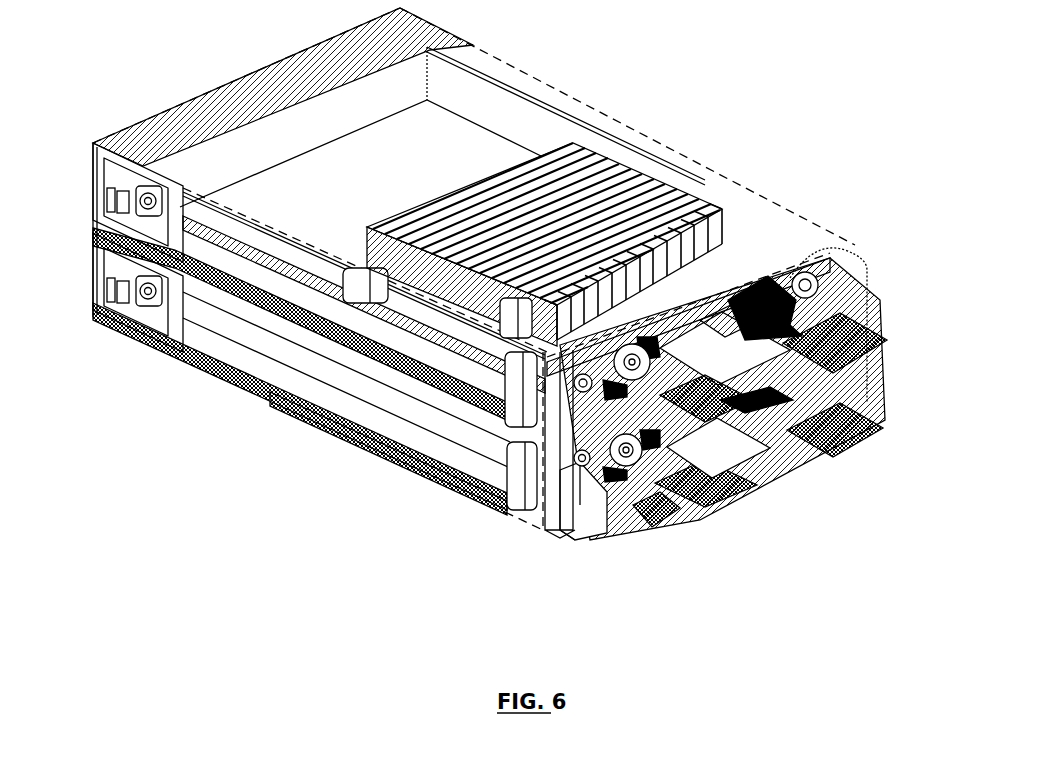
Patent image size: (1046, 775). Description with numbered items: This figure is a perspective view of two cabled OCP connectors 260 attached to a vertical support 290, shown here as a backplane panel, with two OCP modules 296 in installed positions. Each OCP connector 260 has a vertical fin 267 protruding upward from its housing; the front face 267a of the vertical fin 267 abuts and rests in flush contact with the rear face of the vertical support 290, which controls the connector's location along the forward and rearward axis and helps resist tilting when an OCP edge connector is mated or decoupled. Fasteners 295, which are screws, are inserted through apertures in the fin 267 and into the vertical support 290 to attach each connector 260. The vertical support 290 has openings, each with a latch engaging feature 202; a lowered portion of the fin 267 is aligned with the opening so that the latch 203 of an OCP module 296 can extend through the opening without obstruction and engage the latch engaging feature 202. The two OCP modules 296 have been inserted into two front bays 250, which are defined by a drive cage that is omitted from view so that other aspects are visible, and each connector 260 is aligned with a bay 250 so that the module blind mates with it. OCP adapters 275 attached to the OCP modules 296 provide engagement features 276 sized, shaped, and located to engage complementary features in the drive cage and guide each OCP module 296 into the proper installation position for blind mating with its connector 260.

The latch engaging feature 202 is at (693, 320).
The latch 203 is at (797, 323).
The front bay 250 is at (92, 207).
The OCP connector 260 is at (820, 347).
The vertical fin 267 is at (780, 277).
The front face 267a is at (733, 323).
The OCP adapter 275 is at (523, 468).
The engagement feature 276 is at (330, 407).
The vertical support 290 is at (567, 497).
The fastener 295 is at (823, 273).
The OCP module 296 is at (437, 182).